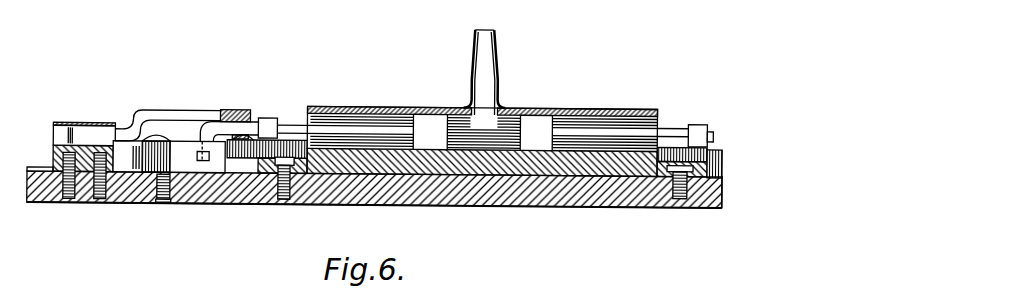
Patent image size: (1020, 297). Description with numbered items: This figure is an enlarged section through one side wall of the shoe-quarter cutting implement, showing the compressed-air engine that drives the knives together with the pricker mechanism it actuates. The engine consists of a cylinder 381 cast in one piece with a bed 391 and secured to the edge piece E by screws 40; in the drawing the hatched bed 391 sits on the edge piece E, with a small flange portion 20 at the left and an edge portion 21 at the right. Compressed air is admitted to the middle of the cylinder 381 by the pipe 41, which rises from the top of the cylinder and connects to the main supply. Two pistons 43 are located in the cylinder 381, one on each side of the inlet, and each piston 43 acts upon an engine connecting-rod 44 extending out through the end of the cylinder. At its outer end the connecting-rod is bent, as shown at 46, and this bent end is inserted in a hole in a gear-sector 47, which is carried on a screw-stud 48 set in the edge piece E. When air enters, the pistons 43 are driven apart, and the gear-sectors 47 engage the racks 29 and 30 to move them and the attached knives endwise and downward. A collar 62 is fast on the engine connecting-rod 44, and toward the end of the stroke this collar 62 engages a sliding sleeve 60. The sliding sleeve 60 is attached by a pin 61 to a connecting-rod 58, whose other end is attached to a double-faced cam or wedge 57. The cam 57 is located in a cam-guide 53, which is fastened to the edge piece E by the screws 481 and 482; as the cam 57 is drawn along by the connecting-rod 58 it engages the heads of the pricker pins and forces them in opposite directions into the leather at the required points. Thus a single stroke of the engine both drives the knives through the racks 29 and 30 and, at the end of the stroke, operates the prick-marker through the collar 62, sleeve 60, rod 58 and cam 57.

The base flange 20 is at (33, 166).
The base edge 21 is at (725, 170).
The rack 29 is at (243, 157).
The rack 30 is at (715, 143).
The screws 40 is at (281, 197).
The pipe 41 is at (494, 53).
The pistons 43 is at (423, 122).
The engine connecting-rod 44 is at (331, 128).
The bent end of engine connecting-rod 46 is at (169, 203).
The gear-sector 47 is at (183, 140).
The screw-stud 48 is at (154, 203).
The cam-guide 53 is at (65, 121).
The double-faced cam 57 is at (87, 133).
The connecting-rod 58 is at (147, 108).
The sliding sleeve 60 is at (253, 119).
The pin 61 is at (242, 107).
The collar 62 is at (271, 117).
The cylinder 381 is at (619, 105).
The bed 391 is at (659, 172).
The screw 481 is at (72, 203).
The screw 482 is at (96, 203).
The edge piece E is at (517, 203).